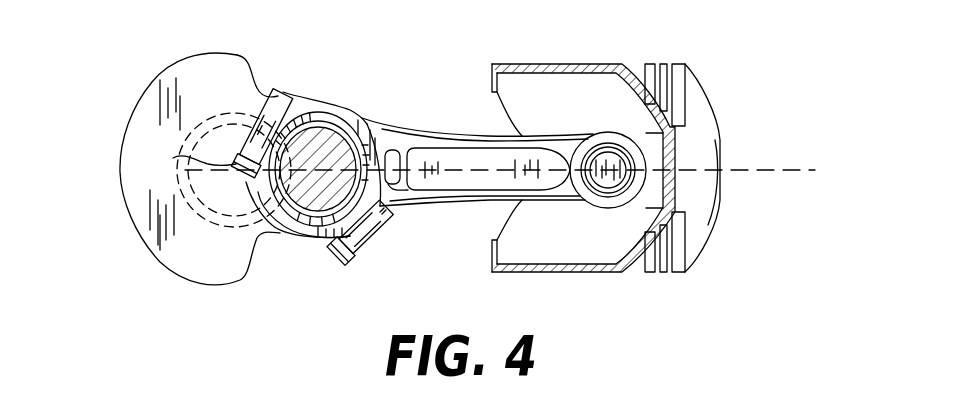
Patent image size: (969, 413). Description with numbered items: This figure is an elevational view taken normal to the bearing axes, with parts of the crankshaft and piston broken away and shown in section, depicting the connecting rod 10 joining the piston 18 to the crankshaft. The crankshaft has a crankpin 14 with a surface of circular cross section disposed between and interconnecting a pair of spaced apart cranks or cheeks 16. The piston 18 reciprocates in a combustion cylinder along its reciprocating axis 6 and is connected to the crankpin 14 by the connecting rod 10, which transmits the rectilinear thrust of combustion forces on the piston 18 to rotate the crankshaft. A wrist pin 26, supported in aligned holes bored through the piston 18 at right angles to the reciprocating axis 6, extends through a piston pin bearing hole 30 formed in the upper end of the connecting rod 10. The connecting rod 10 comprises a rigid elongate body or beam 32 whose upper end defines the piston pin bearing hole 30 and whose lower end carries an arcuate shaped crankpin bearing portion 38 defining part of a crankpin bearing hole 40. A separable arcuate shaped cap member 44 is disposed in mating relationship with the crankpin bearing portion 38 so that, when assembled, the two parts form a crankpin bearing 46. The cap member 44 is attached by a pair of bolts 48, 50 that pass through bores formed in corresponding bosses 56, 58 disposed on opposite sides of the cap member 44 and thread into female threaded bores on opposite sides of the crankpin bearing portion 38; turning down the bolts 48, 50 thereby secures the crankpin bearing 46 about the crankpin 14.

The reciprocating axis 6 is at (782, 167).
The connecting rod 10 is at (453, 134).
The crankpin 14 is at (324, 128).
The cranks or cheeks 16 is at (150, 112).
The piston 18 is at (693, 127).
The wrist pin 26 is at (601, 150).
The piston pin bearing hole 30 is at (600, 180).
The beam 32 is at (474, 200).
The crankpin bearing portion 38 is at (354, 118).
The crankpin bearing hole 40 is at (302, 232).
The cap member 44 is at (318, 232).
The crankpin bearing 46 is at (308, 96).
The bolt 48 is at (356, 252).
The bolt 50 is at (222, 207).
The boss 56 is at (374, 234).
The boss 58 is at (184, 160).